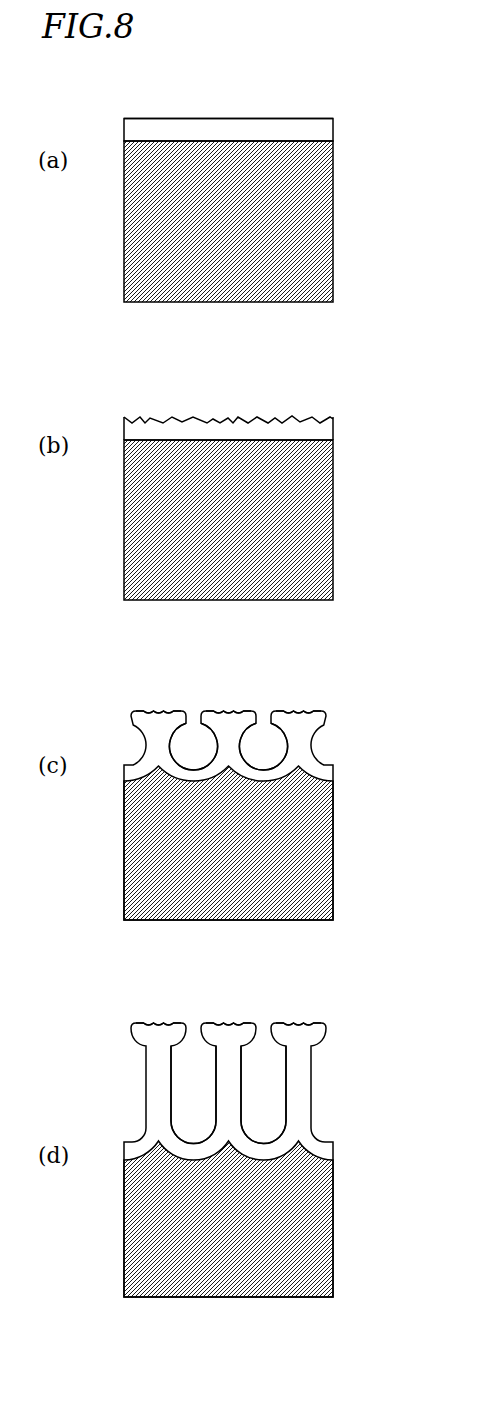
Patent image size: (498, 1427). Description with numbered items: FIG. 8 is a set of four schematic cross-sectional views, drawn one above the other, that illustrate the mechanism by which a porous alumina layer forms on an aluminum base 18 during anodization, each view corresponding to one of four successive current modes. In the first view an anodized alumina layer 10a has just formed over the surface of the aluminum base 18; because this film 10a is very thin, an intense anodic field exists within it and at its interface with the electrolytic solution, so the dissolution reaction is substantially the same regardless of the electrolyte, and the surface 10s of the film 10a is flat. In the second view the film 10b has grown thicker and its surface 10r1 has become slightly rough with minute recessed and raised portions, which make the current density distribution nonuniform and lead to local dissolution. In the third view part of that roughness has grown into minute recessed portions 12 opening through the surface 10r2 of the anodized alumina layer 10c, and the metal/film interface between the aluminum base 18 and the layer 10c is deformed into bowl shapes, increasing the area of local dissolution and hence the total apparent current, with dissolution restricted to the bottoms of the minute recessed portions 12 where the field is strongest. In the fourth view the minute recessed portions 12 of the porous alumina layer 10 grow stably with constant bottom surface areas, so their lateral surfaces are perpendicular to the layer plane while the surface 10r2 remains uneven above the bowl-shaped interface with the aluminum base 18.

The aluminum base 18 is at (333, 253).
The anodized alumina layer 10a is at (332, 122).
The surface of the film 10s is at (252, 117).
The film 10b is at (333, 422).
The surface of the film 10r1 is at (297, 417).
The anodized alumina layer 10c is at (333, 766).
The porous alumina layer 10 is at (304, 1095).
The surface of the anodized alumina layer 10r2 is at (308, 708).
The minute recessed portions 12 is at (263, 728).